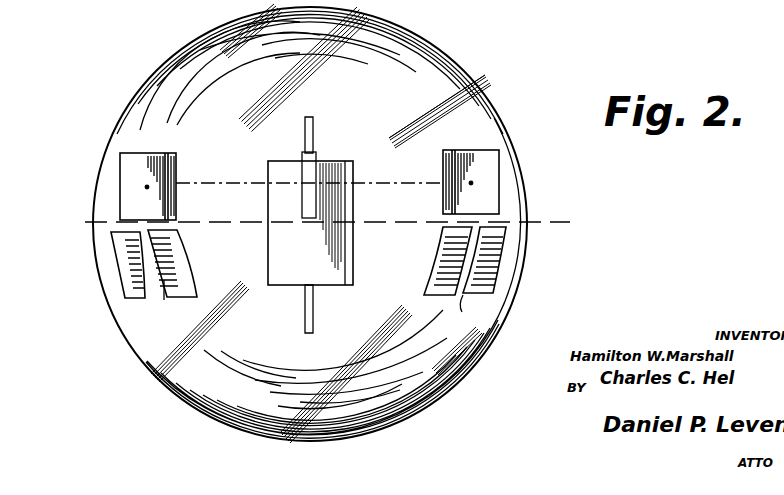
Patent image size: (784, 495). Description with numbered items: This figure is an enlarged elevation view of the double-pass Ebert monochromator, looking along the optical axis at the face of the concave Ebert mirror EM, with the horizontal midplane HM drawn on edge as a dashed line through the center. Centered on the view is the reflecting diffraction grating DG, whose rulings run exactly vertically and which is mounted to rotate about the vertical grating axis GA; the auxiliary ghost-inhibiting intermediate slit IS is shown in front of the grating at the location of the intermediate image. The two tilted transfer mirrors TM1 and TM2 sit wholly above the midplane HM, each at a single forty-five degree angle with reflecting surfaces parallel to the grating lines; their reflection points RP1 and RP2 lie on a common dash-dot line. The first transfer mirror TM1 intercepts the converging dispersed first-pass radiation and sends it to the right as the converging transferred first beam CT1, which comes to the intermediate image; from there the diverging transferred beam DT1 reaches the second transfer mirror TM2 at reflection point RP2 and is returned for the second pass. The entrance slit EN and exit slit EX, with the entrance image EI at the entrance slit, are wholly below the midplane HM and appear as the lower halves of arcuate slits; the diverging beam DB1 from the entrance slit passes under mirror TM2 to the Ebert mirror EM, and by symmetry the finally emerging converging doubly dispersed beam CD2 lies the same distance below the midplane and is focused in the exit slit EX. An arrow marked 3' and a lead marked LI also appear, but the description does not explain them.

The disc 3' is at (354, 223).
The first transfer mirror TM1 is at (128, 170).
The second transfer mirror TM2 is at (488, 162).
The reflection point of first transfer mirror RP1 is at (147, 187).
The reflection point of second transfer mirror RP2 is at (471, 183).
The converging transferred first beam CT1 is at (209, 190).
The horizontal midplane HM is at (612, 223).
The converging doubly dispersed beam CD2 is at (145, 259).
The exit slit EX is at (123, 283).
The lead LI is at (163, 299).
The diverging beam DB1 is at (470, 260).
The entrance slit EN is at (507, 255).
The entrance image EI is at (468, 303).
The Ebert mirror EM is at (467, 377).
The diffraction grating DG is at (325, 262).
The grating axis GA is at (313, 130).
The intermediate slit IS is at (302, 173).
The diverging transferred beam DT1 is at (388, 182).